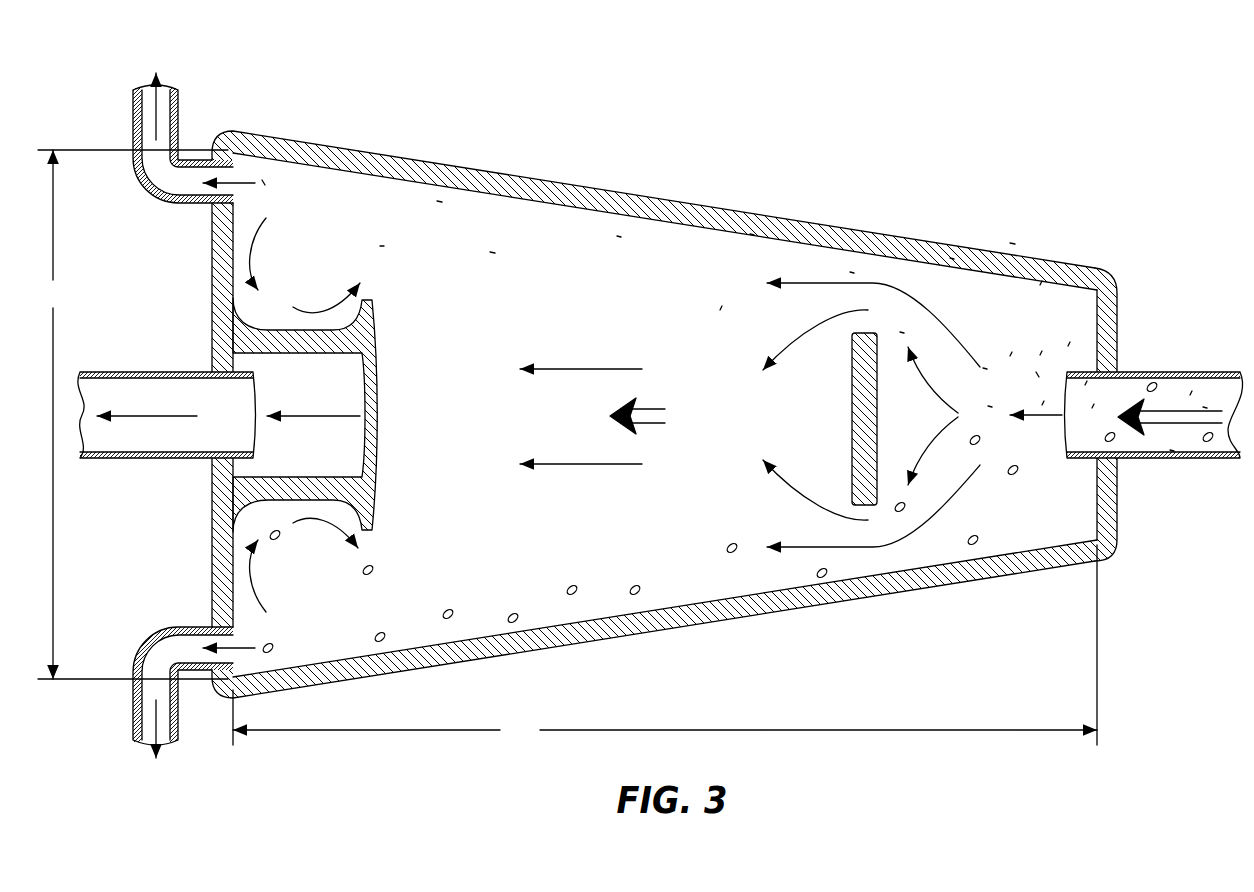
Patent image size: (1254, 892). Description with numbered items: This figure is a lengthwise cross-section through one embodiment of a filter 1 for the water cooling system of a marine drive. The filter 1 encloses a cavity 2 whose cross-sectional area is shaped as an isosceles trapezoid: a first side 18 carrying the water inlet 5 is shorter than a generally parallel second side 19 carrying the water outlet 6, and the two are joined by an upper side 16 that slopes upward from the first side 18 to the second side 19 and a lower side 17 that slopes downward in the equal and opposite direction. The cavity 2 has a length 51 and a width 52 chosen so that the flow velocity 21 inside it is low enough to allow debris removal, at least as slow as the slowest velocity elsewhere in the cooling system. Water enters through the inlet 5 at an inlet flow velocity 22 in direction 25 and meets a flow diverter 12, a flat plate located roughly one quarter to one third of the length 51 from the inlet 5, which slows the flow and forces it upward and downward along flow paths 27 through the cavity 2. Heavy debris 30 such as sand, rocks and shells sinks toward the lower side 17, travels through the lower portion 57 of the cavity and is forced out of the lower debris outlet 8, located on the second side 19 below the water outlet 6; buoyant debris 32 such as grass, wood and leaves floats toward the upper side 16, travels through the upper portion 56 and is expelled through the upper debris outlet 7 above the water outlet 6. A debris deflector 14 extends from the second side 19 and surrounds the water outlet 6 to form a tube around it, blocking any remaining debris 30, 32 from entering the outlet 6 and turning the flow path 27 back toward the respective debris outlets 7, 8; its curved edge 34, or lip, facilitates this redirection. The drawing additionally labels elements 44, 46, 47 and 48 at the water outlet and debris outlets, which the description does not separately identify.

The filter 1 is at (887, 78).
The cavity 2 is at (652, 300).
The water inlet 5 is at (1115, 372).
The water outlet 6 is at (235, 372).
The upper debris outlet 7 is at (213, 203).
The lower debris outlet 8 is at (212, 627).
The flow diverter 12 is at (858, 410).
The debris deflector 14 is at (372, 372).
The upper side 16 is at (641, 200).
The lower side 17 is at (740, 627).
The first side 18 is at (1113, 320).
The second side 19 is at (220, 338).
The flow velocity 21 is at (650, 405).
The inlet flow velocity 22 is at (1180, 410).
The direction 25 is at (1035, 420).
The flow path 27 is at (258, 243).
The heavy debris 30 is at (272, 645).
The buoyant debris 32 is at (268, 186).
The curved edge 34 is at (365, 545).
The drain pipe flow 44 is at (165, 92).
The outlet pipe 46 is at (122, 372).
The upper drain pipe 47 is at (132, 128).
The lower drain pipe 48 is at (132, 695).
The length 51 is at (665, 645).
The width 52 is at (133, 414).
The upper portion 56 is at (183, 282).
The lower portion 57 is at (183, 551).